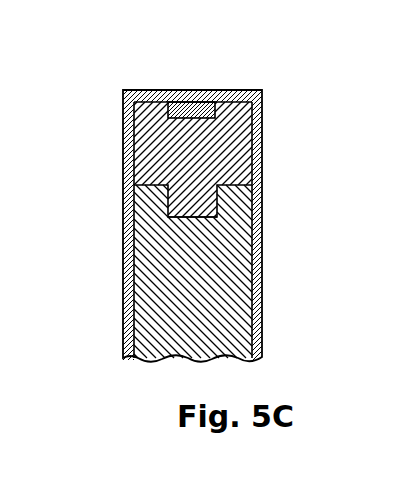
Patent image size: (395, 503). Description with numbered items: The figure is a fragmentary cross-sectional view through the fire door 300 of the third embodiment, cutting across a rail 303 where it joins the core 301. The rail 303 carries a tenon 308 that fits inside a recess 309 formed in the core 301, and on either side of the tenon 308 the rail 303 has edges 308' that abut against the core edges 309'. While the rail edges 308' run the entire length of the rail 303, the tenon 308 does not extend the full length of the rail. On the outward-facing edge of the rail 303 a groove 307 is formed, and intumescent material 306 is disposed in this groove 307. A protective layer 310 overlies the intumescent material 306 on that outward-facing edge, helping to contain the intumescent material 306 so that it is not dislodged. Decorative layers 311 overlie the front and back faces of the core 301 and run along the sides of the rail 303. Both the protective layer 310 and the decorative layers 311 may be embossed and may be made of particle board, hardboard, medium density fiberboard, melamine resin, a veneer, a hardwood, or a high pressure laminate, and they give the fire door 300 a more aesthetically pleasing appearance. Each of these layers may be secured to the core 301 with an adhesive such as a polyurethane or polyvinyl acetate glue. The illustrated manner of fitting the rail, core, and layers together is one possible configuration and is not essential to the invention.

The fire door 300 is at (162, 384).
The core 301 is at (235, 304).
The rail 303 is at (240, 124).
The intumescent material 306 is at (184, 102).
The groove 307 is at (160, 109).
The tenon 308 is at (276, 119).
The rail edges 308' is at (196, 177).
The recess 309 is at (240, 255).
The core edges 309' is at (204, 217).
The protective layer 310 is at (219, 90).
The decorative layer 311 is at (123, 327).